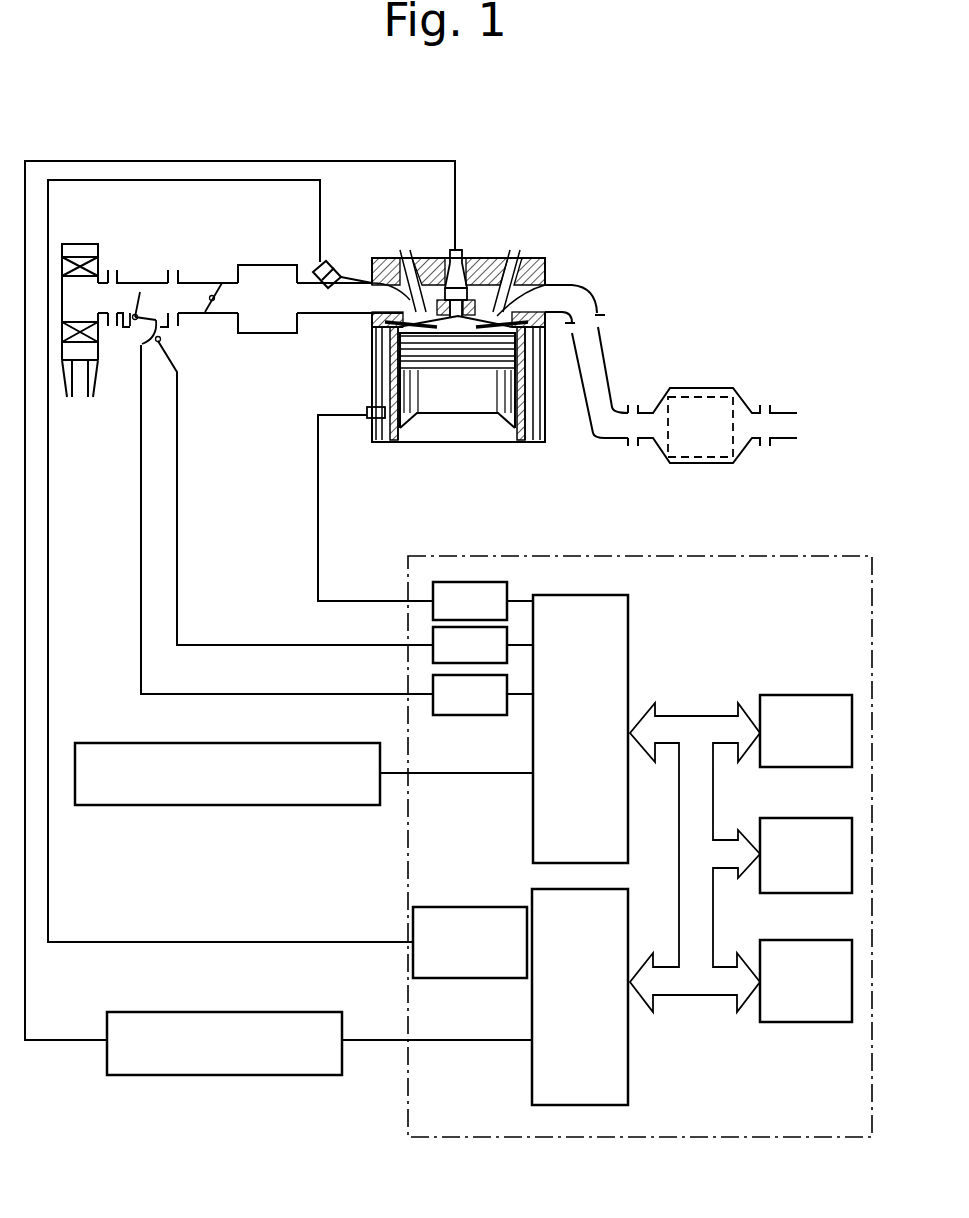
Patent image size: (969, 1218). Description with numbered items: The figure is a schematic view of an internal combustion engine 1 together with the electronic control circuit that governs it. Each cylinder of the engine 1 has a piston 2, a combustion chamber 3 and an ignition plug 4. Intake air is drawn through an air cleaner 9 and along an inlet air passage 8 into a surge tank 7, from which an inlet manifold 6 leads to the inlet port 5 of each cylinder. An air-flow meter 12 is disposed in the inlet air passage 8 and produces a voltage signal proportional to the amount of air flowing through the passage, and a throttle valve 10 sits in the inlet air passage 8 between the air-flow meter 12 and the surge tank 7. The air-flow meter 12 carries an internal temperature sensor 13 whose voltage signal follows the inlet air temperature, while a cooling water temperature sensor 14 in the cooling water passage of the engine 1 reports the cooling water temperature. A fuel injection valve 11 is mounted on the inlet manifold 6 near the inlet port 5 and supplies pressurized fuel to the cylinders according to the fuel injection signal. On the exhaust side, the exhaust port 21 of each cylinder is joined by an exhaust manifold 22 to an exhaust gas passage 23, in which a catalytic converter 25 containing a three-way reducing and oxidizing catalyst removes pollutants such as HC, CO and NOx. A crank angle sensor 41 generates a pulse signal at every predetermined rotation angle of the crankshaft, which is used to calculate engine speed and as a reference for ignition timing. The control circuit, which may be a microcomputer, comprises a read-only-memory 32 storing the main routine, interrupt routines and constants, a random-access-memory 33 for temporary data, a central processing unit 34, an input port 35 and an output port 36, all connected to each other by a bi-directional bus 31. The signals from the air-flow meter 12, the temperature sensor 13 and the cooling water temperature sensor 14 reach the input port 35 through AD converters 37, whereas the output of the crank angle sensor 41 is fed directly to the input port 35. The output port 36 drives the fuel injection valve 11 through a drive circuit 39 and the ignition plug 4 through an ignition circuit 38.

The internal combustion engine 1 is at (557, 426).
The piston 2 is at (470, 400).
The combustion chamber 3 is at (452, 330).
The ignition plug 4 is at (465, 270).
The inlet port 5 is at (386, 290).
The inlet manifold 6 is at (330, 315).
The surge tank 7 is at (270, 334).
The inlet air passage 8 is at (203, 280).
The air cleaner 9 is at (94, 243).
The throttle valve 10 is at (224, 281).
The fuel injection valve 11 is at (328, 262).
The air-flow meter 12 is at (137, 345).
The temperature sensor 13 is at (164, 340).
The cooling water temperature sensor 14 is at (363, 422).
The exhaust port 21 is at (523, 297).
The exhaust manifold 22 is at (572, 283).
The exhaust gas passage 23 is at (606, 355).
The catalytic converter 25 is at (700, 395).
The bi-directional bus 31 is at (697, 716).
The read-only-memory (ROM) 32 is at (826, 695).
The random-access-memory (RAM) 33 is at (802, 818).
The central processing unit (CPU) 34 is at (800, 940).
The input port 35 is at (630, 636).
The output port 36 is at (630, 920).
The AD converter 37 is at (508, 590).
The ignition circuit 38 is at (148, 1012).
The drive circuit 39 is at (458, 907).
The crank angle sensor 41 is at (103, 742).